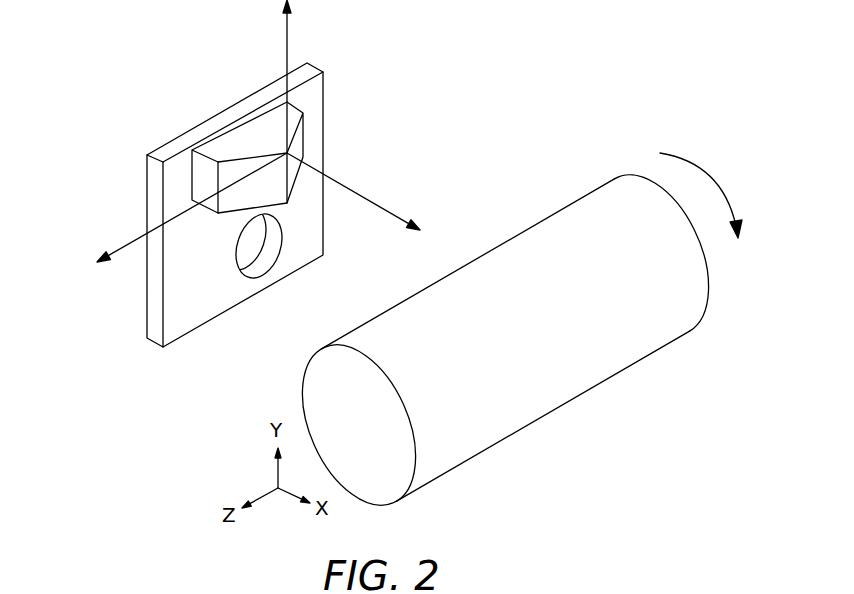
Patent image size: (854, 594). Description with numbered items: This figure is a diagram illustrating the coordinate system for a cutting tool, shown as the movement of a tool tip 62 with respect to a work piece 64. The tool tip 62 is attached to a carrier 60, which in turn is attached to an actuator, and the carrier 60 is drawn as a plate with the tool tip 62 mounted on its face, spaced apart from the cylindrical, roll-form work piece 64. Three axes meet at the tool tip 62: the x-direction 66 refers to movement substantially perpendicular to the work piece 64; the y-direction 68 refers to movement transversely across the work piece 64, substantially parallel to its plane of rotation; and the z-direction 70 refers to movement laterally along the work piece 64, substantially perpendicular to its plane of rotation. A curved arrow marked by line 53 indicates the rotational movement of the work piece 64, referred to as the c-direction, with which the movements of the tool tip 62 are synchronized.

The line representing c-direction rotational movement 53 is at (703, 163).
The carrier 60 is at (172, 147).
The tool tip 62 is at (253, 137).
The work piece 64 is at (578, 363).
The x-direction 66 is at (362, 193).
The y-direction 68 is at (288, 32).
The z-direction 70 is at (133, 235).